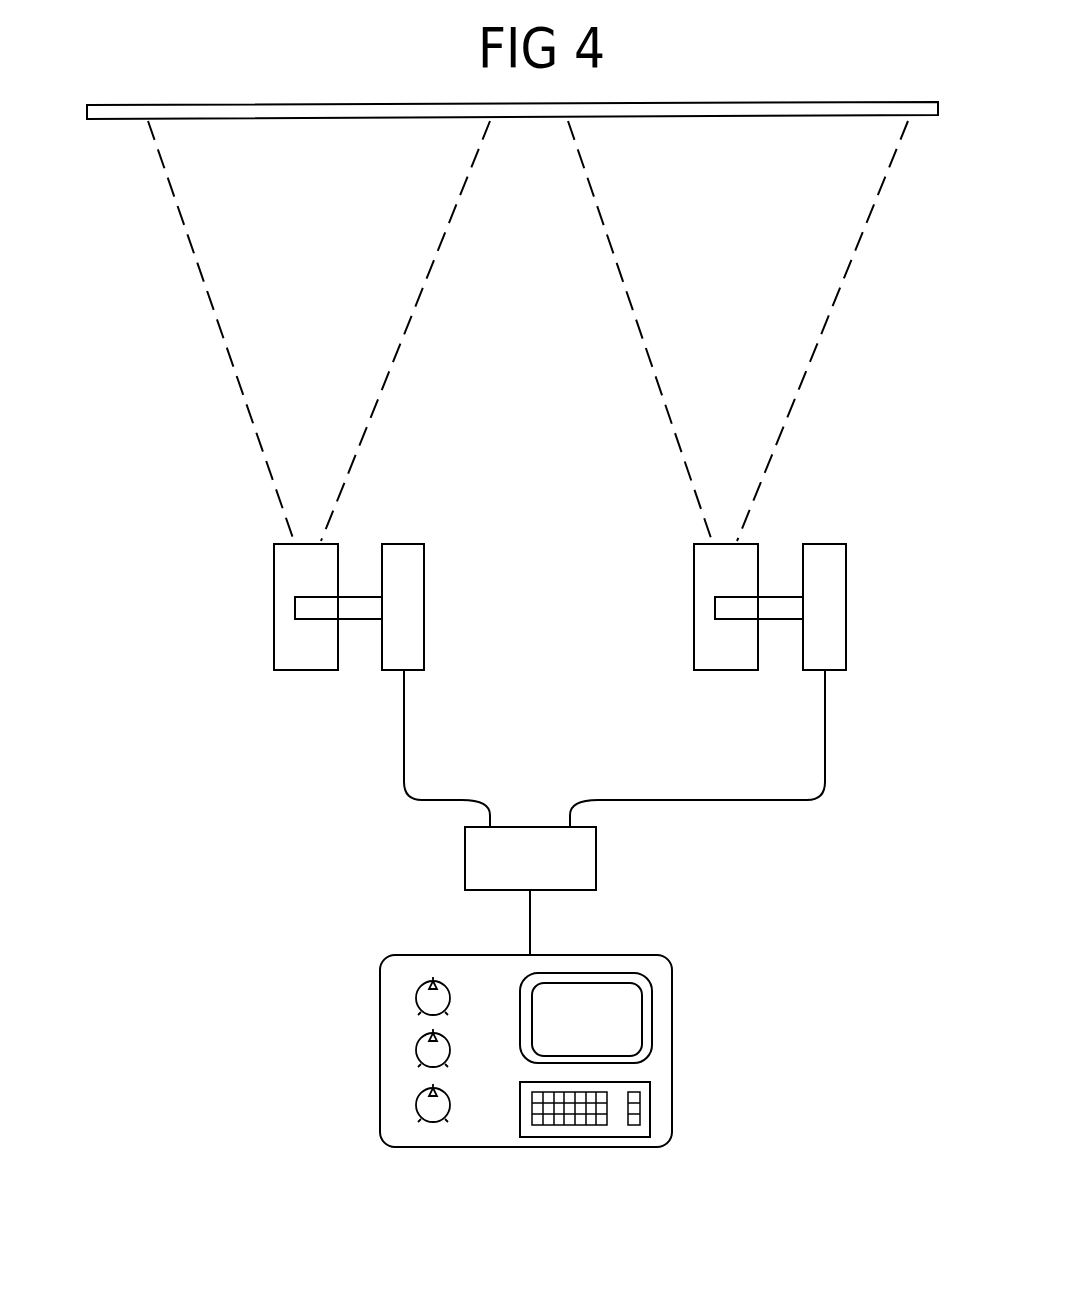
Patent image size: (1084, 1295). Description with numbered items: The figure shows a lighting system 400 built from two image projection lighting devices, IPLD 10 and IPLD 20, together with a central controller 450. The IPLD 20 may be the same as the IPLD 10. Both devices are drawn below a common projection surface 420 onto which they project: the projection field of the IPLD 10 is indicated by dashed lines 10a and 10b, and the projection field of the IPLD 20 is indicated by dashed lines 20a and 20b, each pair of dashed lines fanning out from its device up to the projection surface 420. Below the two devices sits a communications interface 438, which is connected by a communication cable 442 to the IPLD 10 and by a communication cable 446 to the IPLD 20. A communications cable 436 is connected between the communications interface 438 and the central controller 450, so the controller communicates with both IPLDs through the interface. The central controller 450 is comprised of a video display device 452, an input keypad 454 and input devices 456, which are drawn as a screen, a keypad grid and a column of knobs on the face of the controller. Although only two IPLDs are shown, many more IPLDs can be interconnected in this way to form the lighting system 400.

The lighting system 400 is at (126, 336).
The projection surface 420 is at (357, 128).
The IPLD 10 is at (255, 638).
The dashed line 10a is at (260, 478).
The dashed line 10b is at (347, 478).
The IPLD 20 is at (857, 642).
The dashed line 20a is at (678, 478).
The dashed line 20b is at (765, 478).
The communication cable 442 is at (397, 728).
The communication cable 446 is at (668, 805).
The communications interface 438 is at (465, 868).
The communications cable 436 is at (537, 930).
The central controller 450 is at (380, 1052).
The video display device 452 is at (652, 1015).
The input keypad 454 is at (653, 1108).
The input devices 456 is at (460, 1017).